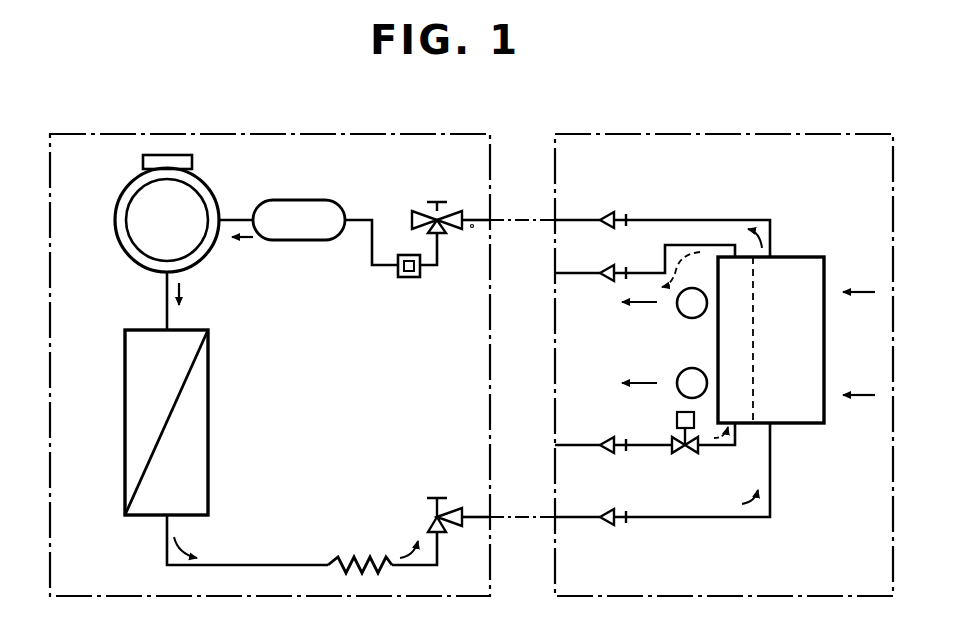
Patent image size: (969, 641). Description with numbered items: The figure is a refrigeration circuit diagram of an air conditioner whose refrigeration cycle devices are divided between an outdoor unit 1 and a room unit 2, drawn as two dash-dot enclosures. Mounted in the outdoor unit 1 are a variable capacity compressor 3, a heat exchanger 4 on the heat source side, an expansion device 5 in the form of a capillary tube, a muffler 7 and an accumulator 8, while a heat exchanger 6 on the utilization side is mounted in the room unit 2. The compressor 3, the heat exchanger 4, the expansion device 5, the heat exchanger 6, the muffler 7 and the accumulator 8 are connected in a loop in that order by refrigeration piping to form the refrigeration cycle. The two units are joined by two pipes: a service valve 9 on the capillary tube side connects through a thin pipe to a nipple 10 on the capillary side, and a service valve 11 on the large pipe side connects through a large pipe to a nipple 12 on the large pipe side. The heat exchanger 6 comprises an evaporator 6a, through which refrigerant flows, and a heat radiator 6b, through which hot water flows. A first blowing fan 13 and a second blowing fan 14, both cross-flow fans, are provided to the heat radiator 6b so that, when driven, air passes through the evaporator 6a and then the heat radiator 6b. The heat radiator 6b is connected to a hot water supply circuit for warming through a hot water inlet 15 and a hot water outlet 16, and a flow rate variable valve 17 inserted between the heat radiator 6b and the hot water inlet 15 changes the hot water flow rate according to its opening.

The outdoor unit 1 is at (386, 134).
The room unit 2 is at (803, 134).
The compressor 3 is at (135, 210).
The heat exchanger on the heat source side 4 is at (128, 431).
The expansion device 5 is at (360, 560).
The heat exchanger on the utilization side 6 is at (797, 426).
The evaporator 6a is at (787, 340).
The heat radiator 6b is at (718, 347).
The muffler 7 is at (408, 280).
The accumulator 8 is at (302, 208).
The service valve on the capillary tube side 9 is at (450, 527).
The nipple on the capillary side 10 is at (605, 521).
The service valve on the large pipe side 11 is at (448, 235).
The nipple on the large pipe side 12 is at (615, 218).
The first blowing fan 13 is at (678, 309).
The second blowing fan 14 is at (678, 377).
The hot water inlet 15 is at (605, 440).
The hot water outlet 16 is at (605, 270).
The flow rate variable valve 17 is at (688, 454).